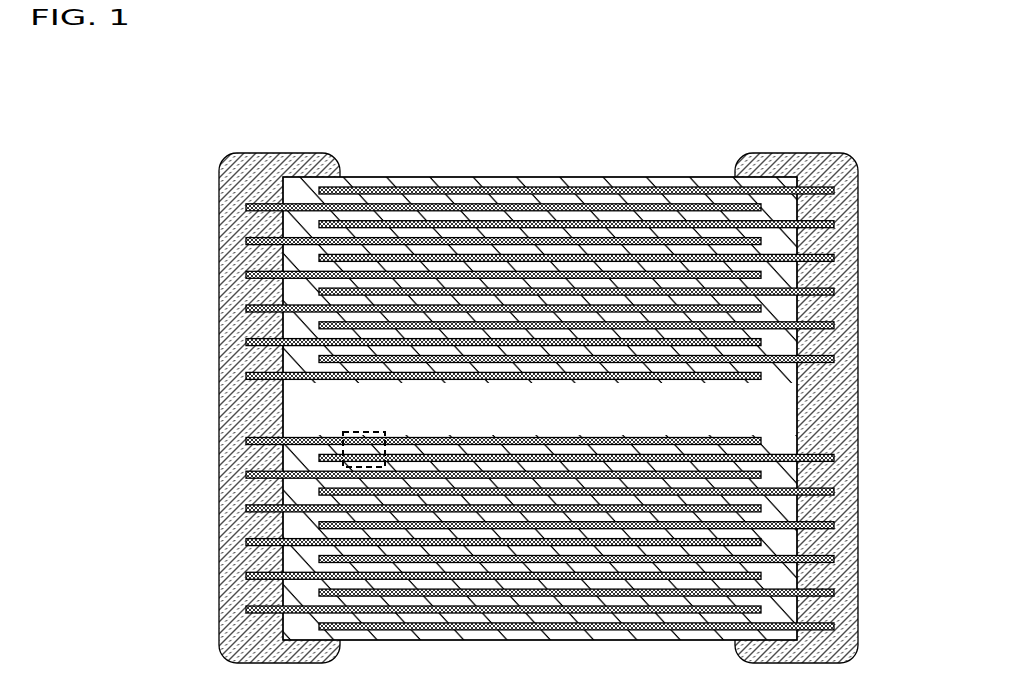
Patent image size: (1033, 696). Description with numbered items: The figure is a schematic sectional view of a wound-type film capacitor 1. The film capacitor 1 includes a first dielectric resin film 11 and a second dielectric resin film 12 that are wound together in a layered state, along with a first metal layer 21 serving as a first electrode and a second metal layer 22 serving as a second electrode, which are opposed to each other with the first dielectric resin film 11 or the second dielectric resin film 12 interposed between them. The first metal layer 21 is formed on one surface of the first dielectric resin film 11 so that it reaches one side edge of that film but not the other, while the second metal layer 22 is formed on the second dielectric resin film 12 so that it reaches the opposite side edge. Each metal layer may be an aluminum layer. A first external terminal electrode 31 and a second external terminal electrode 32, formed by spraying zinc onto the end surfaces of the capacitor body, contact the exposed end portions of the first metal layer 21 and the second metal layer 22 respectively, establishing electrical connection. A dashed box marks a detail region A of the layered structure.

The film capacitor 1 is at (185, 121).
The first dielectric resin film 11 is at (428, 236).
The second dielectric resin film 12 is at (633, 218).
The first metal layer 21 is at (323, 240).
The second metal layer 22 is at (732, 225).
The first external terminal electrode 31 is at (230, 240).
The second external terminal electrode 32 is at (845, 240).
The region A is at (364, 431).